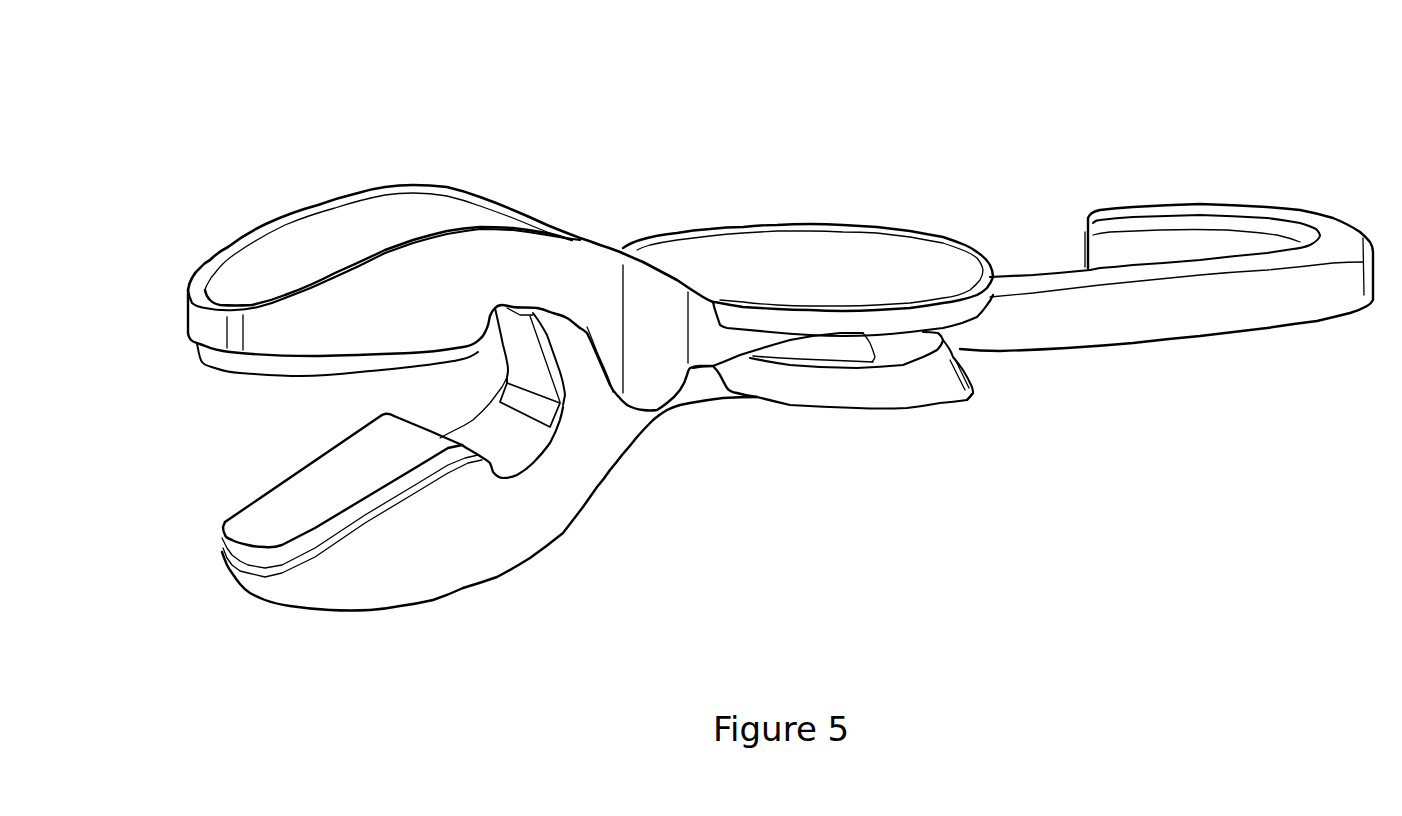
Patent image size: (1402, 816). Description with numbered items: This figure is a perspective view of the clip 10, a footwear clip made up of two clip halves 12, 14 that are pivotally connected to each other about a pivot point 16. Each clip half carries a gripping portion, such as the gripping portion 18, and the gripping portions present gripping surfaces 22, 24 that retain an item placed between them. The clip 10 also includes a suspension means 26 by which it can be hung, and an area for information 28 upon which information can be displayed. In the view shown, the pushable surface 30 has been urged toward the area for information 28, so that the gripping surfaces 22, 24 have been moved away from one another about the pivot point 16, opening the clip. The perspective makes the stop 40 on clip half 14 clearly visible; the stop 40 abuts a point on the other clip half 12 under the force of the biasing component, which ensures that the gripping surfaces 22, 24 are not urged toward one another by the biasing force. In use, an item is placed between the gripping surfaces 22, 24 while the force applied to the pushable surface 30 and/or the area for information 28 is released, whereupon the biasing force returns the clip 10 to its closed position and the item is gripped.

The clip 10 is at (748, 180).
The clip half 12 is at (336, 196).
The clip half 14 is at (583, 507).
The pivot point 16 is at (660, 382).
The gripping portion 18 is at (186, 310).
The gripping surface 22 is at (253, 377).
The gripping surface 24 is at (257, 497).
The suspension means 26 is at (1163, 323).
The area for information 28 is at (667, 255).
The pushable surface 30 is at (937, 388).
The stop 40 is at (520, 358).